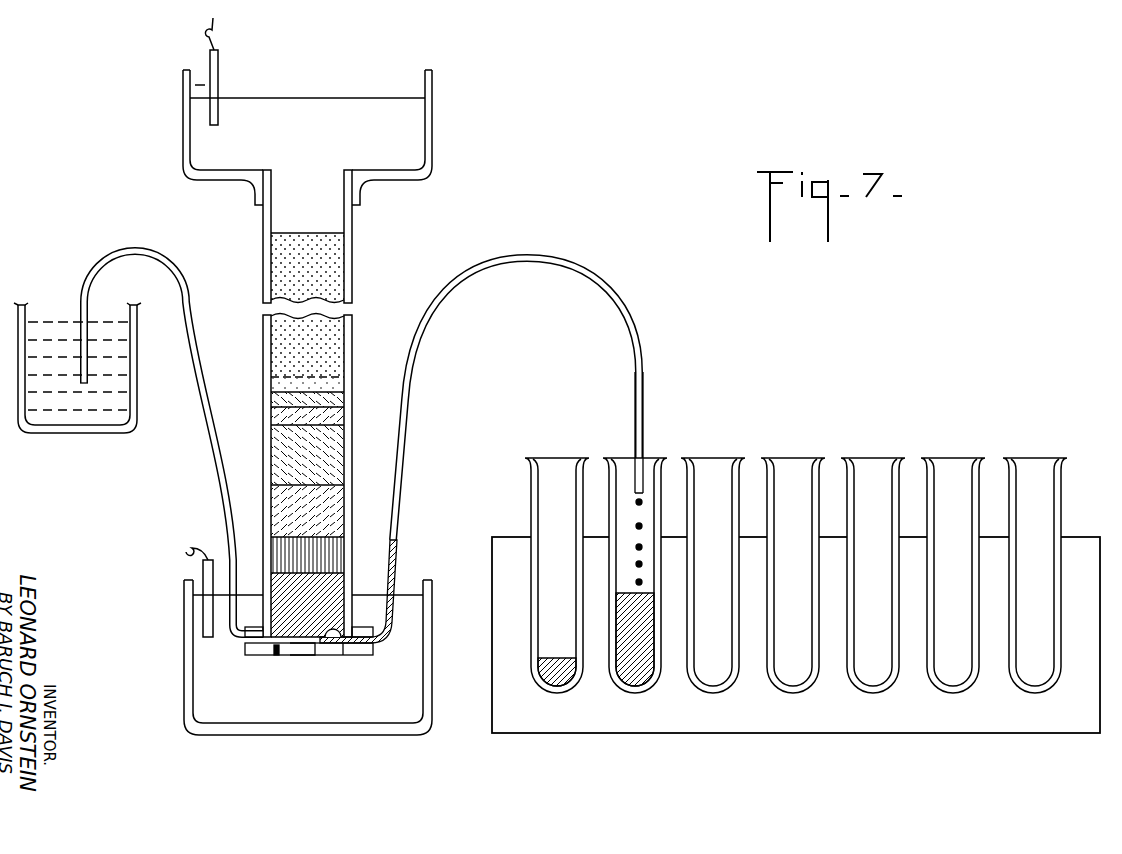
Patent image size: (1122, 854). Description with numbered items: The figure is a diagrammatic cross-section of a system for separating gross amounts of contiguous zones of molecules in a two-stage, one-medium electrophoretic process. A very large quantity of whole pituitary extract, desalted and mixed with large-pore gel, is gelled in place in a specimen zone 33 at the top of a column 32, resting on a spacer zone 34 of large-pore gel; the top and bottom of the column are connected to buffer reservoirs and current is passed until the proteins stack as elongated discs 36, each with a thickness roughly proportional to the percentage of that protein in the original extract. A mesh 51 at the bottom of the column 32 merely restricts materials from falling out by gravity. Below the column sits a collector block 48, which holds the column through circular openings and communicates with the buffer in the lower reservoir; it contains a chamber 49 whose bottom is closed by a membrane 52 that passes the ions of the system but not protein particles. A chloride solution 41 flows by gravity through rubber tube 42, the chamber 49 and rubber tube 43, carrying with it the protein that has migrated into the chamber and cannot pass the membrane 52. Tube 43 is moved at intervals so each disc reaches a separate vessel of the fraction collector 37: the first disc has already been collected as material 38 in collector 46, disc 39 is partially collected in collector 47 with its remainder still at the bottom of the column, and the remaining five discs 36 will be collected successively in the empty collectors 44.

The column 32 is at (352, 264).
The specimen zone 33 is at (322, 341).
The spacer zone 34 is at (328, 385).
The discs 36 is at (335, 557).
The fraction collector 37 is at (779, 735).
The material 38 is at (565, 683).
The disc 39 is at (333, 594).
The chloride solution 41 is at (92, 413).
The rubber tube 42 is at (222, 463).
The rubber tube 43 is at (400, 486).
The empty collectors 44 is at (863, 456).
The collector 46 is at (563, 563).
The collector 47 is at (662, 478).
The collector block 48 is at (255, 648).
The chamber 49 is at (277, 656).
The mesh 51 is at (333, 638).
The membrane 52 is at (303, 655).